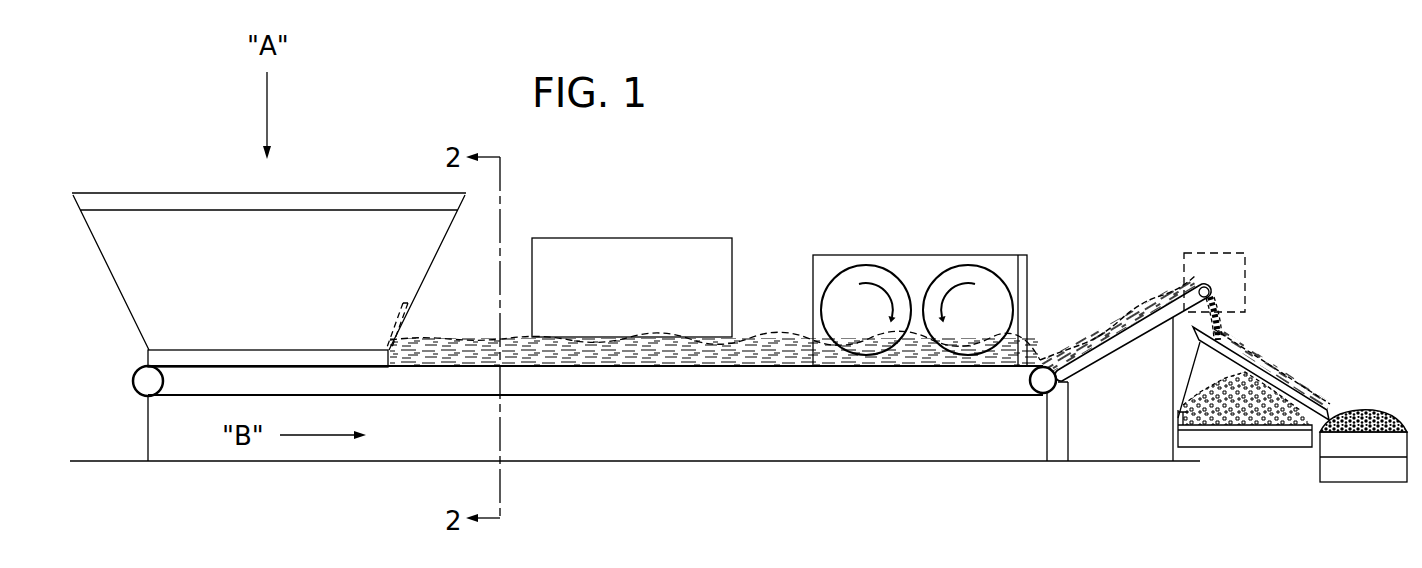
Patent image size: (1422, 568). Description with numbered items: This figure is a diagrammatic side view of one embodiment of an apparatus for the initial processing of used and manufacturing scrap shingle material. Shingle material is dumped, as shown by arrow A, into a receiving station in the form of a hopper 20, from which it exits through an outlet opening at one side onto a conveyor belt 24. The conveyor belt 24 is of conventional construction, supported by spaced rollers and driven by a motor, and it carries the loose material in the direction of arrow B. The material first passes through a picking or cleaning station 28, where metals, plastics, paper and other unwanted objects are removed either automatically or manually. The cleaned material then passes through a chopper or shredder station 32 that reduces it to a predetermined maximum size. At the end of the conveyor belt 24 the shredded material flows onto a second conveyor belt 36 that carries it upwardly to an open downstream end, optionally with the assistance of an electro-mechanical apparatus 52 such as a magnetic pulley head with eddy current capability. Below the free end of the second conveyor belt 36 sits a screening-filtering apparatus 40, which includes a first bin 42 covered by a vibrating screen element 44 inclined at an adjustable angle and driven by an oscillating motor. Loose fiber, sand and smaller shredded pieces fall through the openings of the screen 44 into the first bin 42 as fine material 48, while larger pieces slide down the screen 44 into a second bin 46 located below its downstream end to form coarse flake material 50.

The hopper 20 is at (325, 193).
The conveyor belt 24 is at (565, 384).
The cleaning station 28 is at (632, 238).
The shredder station 32 is at (930, 255).
The second conveyor belt 36 is at (1168, 297).
The screening-filtering apparatus 40 is at (1274, 322).
The first bin 42 is at (1275, 441).
The vibrating screen element 44 is at (1286, 368).
The second bin 46 is at (1362, 473).
The fine material 48 is at (1182, 418).
The coarse flake material 50 is at (1360, 411).
The electro-mechanical apparatus 52 is at (1245, 272).